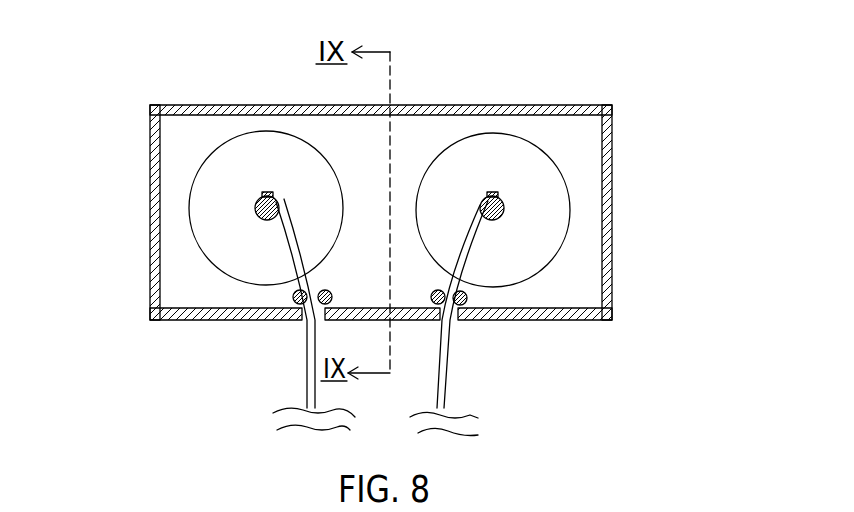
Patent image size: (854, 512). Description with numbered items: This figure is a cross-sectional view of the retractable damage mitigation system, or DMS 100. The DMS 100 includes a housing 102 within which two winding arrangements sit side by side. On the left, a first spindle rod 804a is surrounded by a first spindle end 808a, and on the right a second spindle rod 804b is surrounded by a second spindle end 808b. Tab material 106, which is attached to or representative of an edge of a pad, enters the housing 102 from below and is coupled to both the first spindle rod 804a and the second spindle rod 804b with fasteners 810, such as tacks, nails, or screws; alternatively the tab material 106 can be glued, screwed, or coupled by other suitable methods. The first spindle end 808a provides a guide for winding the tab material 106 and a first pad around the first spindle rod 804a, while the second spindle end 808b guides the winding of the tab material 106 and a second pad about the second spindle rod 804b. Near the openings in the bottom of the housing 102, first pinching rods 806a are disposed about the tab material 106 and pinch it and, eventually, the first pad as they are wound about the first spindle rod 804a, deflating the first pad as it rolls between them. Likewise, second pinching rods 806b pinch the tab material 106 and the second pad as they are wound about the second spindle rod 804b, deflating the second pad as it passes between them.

The retractable damage mitigation system 100 is at (328, 231).
The housing 102 is at (443, 104).
The tab material 106 is at (307, 390).
The first spindle rod 804a is at (256, 201).
The second spindle rod 804b is at (505, 208).
The first pinching rods 806a is at (317, 320).
The second pinching rods 806b is at (467, 303).
The first spindle end 808a is at (217, 172).
The second spindle end 808b is at (520, 260).
The fasteners 810 is at (266, 193).